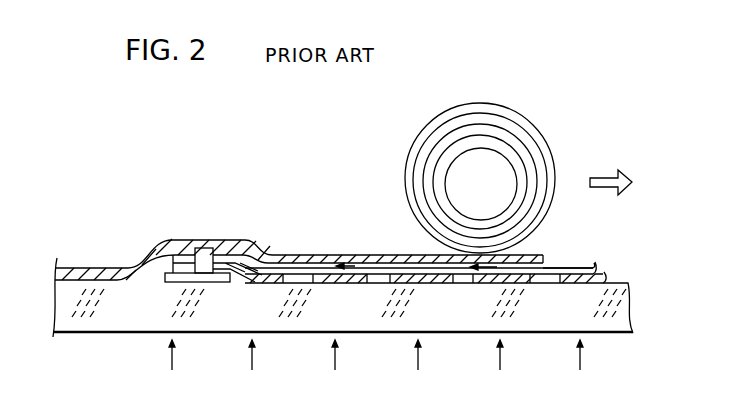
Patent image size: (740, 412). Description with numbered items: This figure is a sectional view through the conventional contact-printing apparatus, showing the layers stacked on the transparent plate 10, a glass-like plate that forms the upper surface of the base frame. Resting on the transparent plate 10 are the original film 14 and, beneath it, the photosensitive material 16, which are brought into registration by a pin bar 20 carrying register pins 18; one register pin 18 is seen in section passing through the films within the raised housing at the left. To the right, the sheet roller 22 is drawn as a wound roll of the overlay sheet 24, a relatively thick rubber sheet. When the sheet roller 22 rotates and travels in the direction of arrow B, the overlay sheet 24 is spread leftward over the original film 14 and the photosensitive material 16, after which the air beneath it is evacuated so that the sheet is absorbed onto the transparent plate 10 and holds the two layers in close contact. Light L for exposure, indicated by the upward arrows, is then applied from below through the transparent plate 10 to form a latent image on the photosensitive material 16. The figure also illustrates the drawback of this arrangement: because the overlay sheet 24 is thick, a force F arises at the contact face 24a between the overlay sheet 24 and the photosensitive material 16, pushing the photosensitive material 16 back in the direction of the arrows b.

The transparent plate 10 is at (106, 320).
The original film 14 is at (573, 285).
The photosensitive material 16 is at (553, 265).
The register pin 18 is at (203, 249).
The pin bar 20 is at (167, 283).
The sheet roller 22 is at (495, 167).
The overlay sheet 24 is at (363, 255).
The contact face 24a is at (296, 268).
The arrows b is at (433, 282).
The arrow B is at (602, 185).
The force F is at (485, 276).
The light L is at (337, 360).